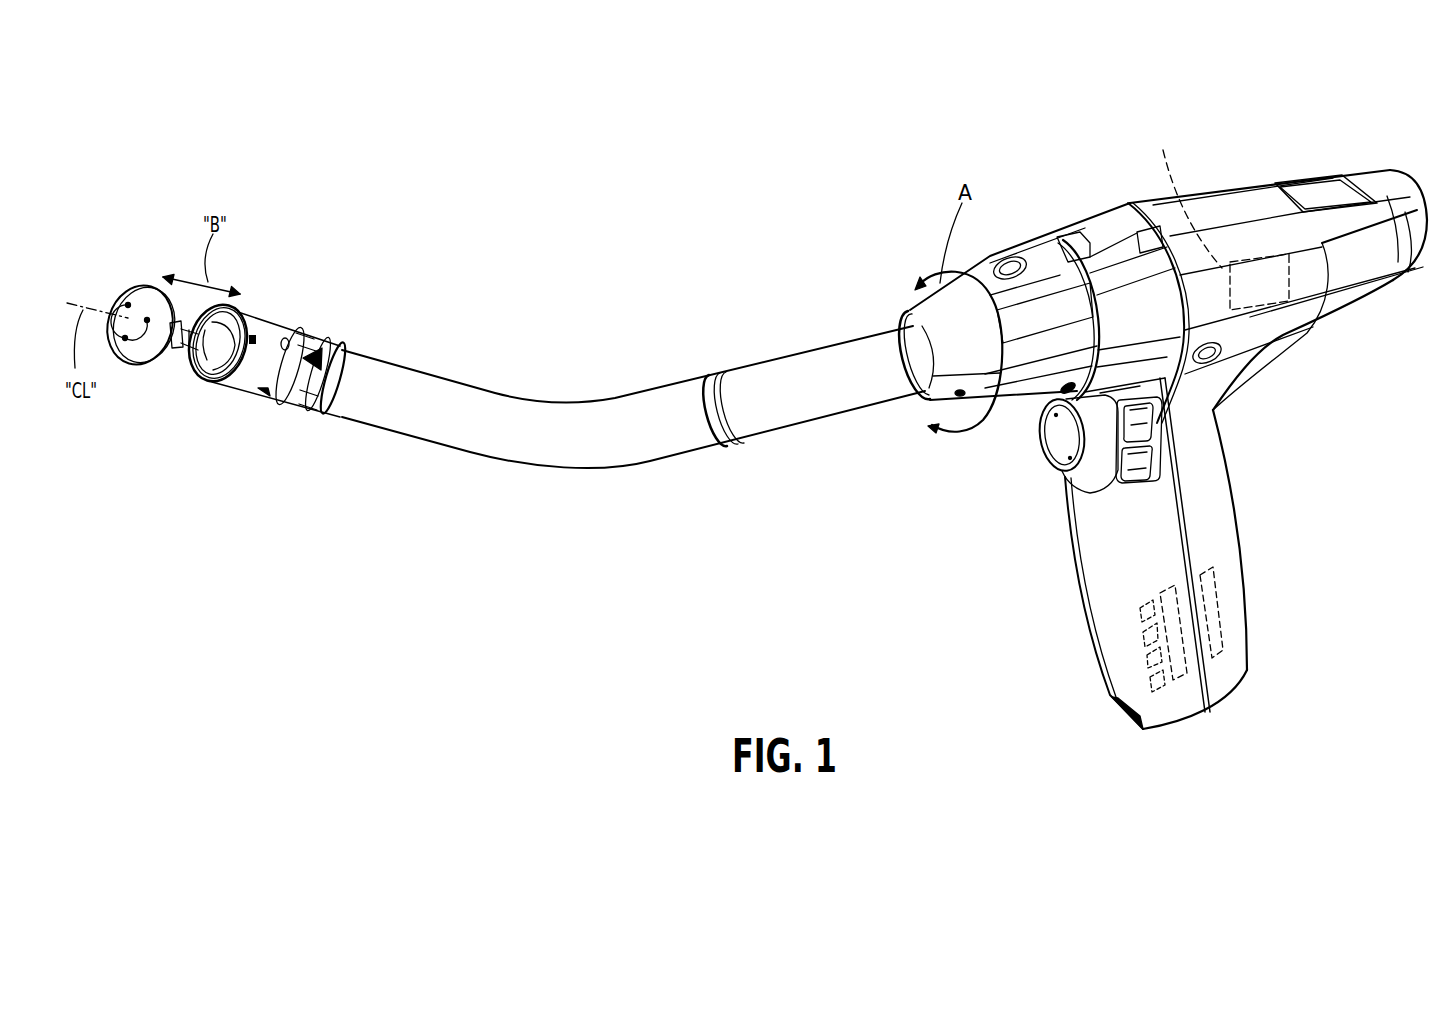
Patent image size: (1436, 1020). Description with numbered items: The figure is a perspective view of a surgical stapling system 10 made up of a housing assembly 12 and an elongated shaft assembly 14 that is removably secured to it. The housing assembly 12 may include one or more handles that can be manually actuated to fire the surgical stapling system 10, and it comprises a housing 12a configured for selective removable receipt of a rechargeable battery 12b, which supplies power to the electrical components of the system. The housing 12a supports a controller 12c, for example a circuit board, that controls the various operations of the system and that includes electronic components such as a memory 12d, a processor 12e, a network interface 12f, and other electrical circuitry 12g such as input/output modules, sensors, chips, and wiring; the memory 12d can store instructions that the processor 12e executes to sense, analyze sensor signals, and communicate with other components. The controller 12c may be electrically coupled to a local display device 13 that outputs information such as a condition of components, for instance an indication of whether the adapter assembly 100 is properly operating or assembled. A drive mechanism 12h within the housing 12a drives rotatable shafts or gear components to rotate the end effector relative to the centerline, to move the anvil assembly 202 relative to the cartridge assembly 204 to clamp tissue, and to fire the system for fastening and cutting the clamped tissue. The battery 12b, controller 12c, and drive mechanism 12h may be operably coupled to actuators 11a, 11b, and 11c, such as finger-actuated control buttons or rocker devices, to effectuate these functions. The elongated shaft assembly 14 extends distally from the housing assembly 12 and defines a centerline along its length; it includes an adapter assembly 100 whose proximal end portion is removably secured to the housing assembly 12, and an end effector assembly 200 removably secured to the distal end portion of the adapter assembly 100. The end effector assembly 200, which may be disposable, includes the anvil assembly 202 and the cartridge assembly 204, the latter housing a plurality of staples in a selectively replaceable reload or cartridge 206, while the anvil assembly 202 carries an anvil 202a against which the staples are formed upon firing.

The surgical stapling system 10 is at (1209, 188).
The actuator 11a is at (1063, 430).
The actuator 11b is at (1150, 425).
The actuator 11c is at (1143, 458).
The housing assembly 12 is at (1300, 297).
The housing 12a is at (1390, 193).
The rechargeable battery 12b is at (1223, 610).
The controller 12c is at (1177, 680).
The memory 12d is at (1141, 612).
The processor 12e is at (1143, 637).
The network interface 12f is at (1147, 660).
The other electrical circuitry 12g is at (1156, 690).
The drive mechanism 12h is at (1184, 196).
The local display device 13 is at (1307, 183).
The elongated shaft assembly 14 is at (775, 417).
The adapter assembly 100 is at (842, 352).
The end effector assembly 200 is at (278, 313).
The anvil assembly 202 is at (138, 288).
The anvil 202a is at (157, 365).
The cartridge assembly 204 is at (203, 380).
The reload or cartridge 206 is at (240, 312).